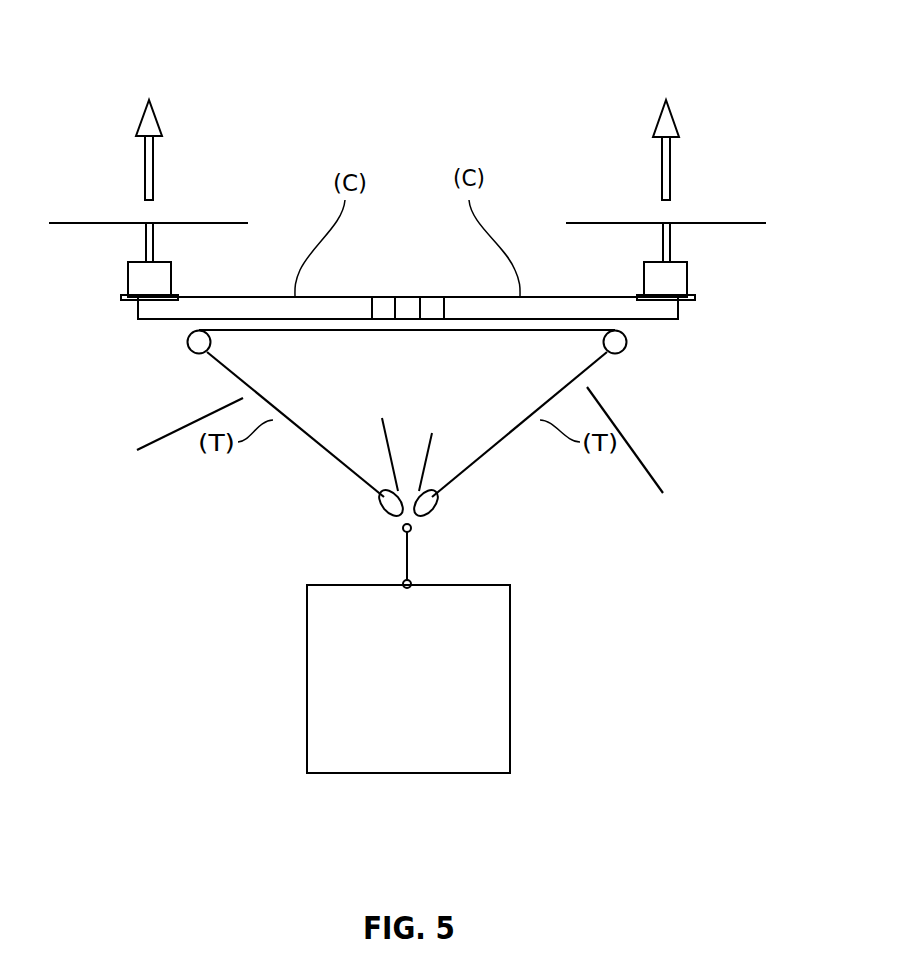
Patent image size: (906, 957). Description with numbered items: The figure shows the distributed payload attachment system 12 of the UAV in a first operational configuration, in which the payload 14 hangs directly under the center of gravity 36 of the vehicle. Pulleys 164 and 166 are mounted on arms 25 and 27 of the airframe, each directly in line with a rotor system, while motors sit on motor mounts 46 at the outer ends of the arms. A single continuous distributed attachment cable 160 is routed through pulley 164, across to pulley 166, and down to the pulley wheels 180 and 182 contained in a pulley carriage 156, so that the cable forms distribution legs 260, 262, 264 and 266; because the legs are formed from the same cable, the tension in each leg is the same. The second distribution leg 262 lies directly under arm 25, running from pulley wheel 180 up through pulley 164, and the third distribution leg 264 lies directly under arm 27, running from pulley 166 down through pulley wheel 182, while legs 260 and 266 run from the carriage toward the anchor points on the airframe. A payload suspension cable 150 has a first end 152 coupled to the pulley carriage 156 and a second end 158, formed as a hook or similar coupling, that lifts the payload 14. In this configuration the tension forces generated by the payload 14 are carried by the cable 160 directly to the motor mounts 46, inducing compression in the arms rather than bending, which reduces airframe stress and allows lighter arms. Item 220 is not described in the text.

The distributed payload attachment system 12 is at (650, 432).
The payload 14 is at (512, 642).
The arm 25 is at (257, 297).
The arm 27 is at (559, 297).
The center of gravity 36 is at (410, 297).
The motor mount 46 is at (118, 297).
The payload suspension cable 150 is at (433, 551).
The first end 152 is at (403, 529).
The pulley carriage 156 is at (405, 583).
The second end 158 is at (410, 583).
The distributed attachment cable 160 is at (228, 385).
The pulley 164 is at (190, 343).
The pulley 166 is at (623, 343).
The pulley wheel 180 is at (437, 505).
The pulley wheel 182 is at (378, 505).
The payload suspension system 220 is at (232, 485).
The first distribution leg 260 is at (402, 413).
The second distribution leg 262 is at (165, 431).
The third distribution leg 264 is at (644, 453).
The fourth distribution leg 266 is at (457, 440).